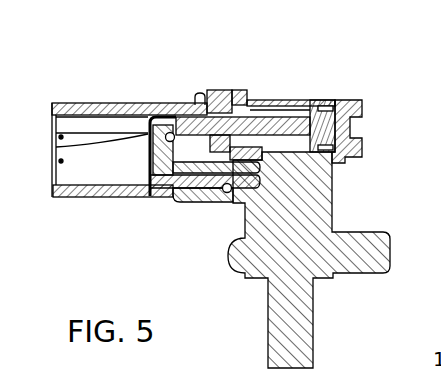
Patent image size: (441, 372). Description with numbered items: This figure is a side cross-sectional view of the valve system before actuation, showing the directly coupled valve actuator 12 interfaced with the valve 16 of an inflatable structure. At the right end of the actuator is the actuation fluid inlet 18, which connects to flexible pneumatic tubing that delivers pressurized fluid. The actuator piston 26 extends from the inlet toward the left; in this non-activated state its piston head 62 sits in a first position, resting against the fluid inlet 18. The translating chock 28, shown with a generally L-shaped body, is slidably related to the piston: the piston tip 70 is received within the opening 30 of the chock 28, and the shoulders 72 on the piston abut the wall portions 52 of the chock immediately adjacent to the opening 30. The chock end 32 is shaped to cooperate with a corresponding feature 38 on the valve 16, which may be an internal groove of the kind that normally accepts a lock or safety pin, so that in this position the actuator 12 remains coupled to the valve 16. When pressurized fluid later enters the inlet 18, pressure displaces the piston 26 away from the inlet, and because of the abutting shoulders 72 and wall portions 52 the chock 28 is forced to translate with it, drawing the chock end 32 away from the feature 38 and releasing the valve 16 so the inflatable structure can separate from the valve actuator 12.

The valve actuator 12 is at (287, 61).
The valve 16 is at (333, 207).
The actuation fluid inlet 18 is at (363, 108).
The actuator piston 26 is at (264, 117).
The translating chock 28 is at (142, 198).
The opening 30 is at (149, 122).
The chock end 32 is at (215, 187).
The corresponding feature 38 is at (232, 197).
The wall portions 52 is at (56, 147).
The piston head 62 is at (318, 117).
The piston tip 70 is at (172, 118).
The shoulders 72 is at (185, 108).